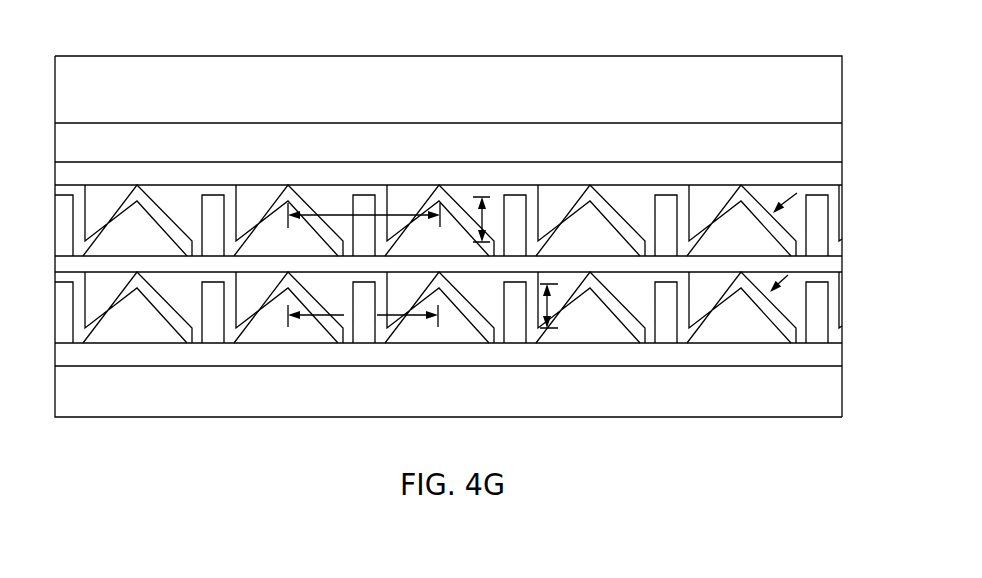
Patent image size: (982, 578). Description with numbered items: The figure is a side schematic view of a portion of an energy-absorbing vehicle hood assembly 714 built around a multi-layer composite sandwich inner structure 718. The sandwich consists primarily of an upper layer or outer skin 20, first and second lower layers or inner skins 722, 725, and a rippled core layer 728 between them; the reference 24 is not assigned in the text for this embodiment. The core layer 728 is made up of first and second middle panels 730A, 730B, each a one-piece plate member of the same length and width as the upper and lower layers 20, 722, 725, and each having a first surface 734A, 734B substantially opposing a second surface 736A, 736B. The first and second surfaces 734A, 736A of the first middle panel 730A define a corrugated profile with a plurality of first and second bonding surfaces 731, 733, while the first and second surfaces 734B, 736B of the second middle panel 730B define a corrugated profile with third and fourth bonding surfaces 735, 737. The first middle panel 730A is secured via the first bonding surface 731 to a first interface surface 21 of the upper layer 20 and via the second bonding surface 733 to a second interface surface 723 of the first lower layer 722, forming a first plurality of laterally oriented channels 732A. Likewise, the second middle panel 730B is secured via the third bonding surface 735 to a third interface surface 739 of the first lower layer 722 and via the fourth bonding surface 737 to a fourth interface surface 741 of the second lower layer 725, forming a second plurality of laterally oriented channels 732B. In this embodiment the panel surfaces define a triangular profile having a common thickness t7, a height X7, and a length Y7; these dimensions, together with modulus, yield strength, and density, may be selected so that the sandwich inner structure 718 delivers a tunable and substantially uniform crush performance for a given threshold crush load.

The energy-absorbing vehicle hood assembly 714 is at (153, 87).
The multi-layer composite sandwich inner structure 718 is at (685, 392).
The top layer 24 is at (250, 135).
The upper layer 20 is at (288, 172).
The rippled core layer 728 is at (732, 172).
The first interface surface 21 is at (413, 193).
The first lower layer 722 is at (127, 262).
The second interface surface 723 is at (513, 242).
The second lower layer 725 is at (520, 352).
The first middle panel 730A is at (678, 192).
The second middle panel 730B is at (647, 332).
The first bonding surface 731 is at (360, 185).
The first plurality of laterally oriented channels 732A is at (283, 224).
The second plurality of laterally oriented channels 732B is at (515, 320).
The second bonding surface 733 is at (797, 258).
The first surface of first middle panel 734A is at (555, 198).
The first surface of second middle panel 734B is at (235, 305).
The third bonding surface 735 is at (70, 272).
The second surface of first middle panel 736A is at (588, 233).
The second surface of second middle panel 736B is at (266, 335).
The fourth bonding surface 737 is at (797, 345).
The third interface surface 739 is at (137, 308).
The fourth interface surface 741 is at (287, 340).
The height X7 is at (482, 197).
The length Y7 is at (364, 259).
The thickness t7 is at (752, 238).